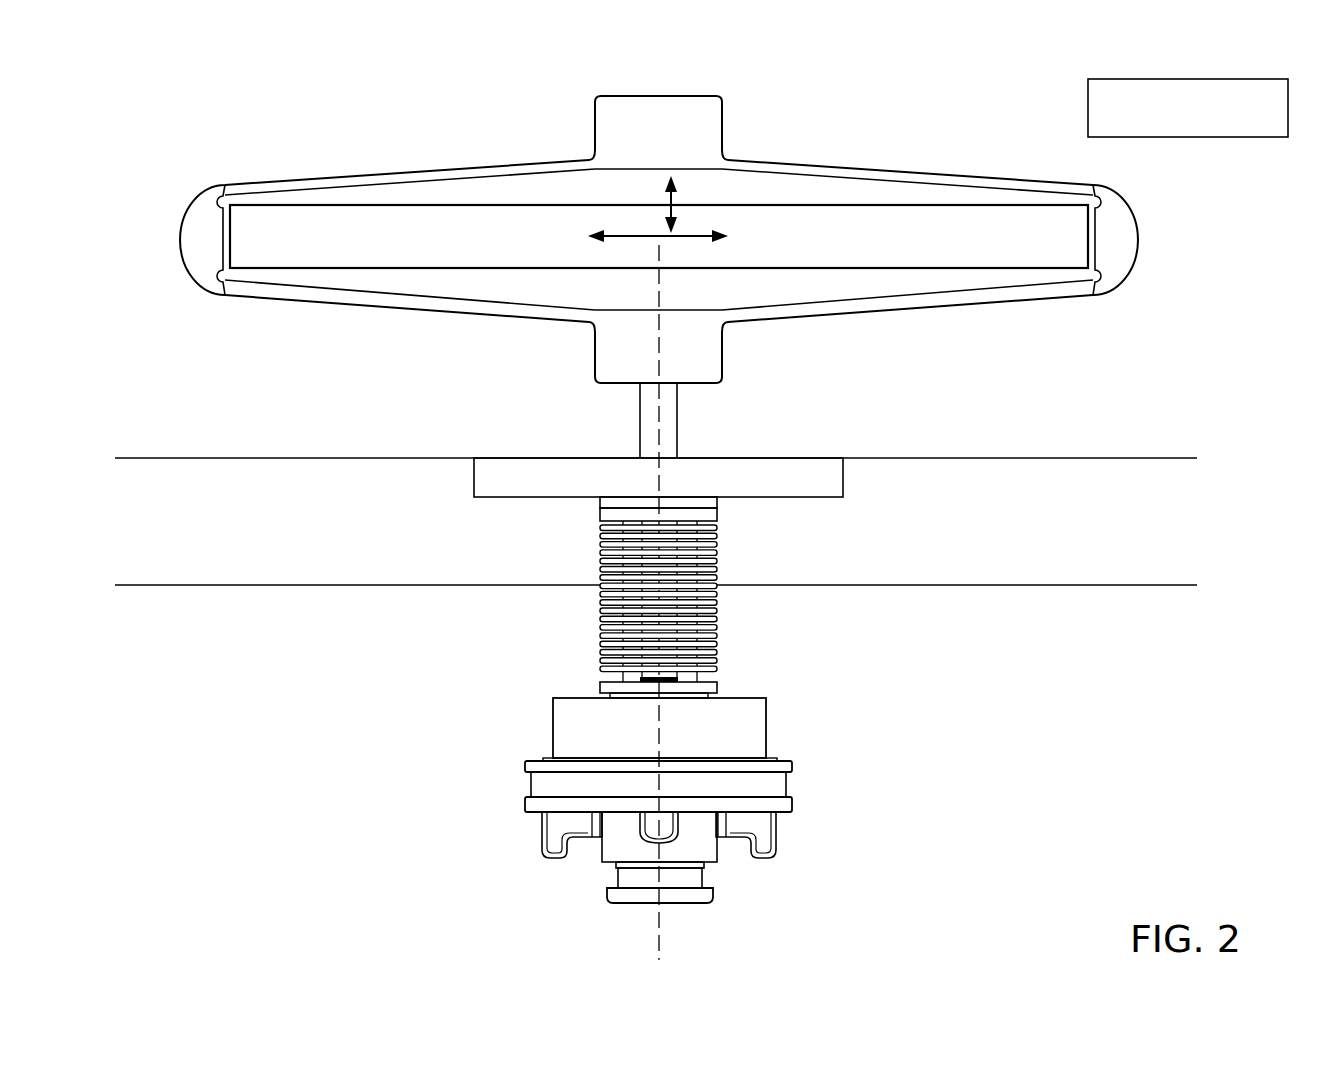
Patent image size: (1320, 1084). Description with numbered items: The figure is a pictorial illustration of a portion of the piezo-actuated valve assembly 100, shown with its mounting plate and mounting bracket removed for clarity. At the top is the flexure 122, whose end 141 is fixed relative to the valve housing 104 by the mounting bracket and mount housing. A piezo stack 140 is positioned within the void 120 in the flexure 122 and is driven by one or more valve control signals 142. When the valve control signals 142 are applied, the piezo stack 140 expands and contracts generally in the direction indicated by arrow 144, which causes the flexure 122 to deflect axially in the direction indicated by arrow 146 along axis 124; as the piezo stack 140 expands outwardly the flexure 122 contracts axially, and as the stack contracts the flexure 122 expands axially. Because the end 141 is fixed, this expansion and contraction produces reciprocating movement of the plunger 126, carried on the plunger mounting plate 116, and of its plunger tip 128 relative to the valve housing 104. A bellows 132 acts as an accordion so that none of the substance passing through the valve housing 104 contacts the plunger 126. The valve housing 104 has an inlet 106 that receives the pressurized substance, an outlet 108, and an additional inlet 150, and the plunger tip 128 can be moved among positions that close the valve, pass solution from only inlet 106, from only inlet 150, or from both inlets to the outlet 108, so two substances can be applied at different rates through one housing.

The piezo-actuated valve assembly 100 is at (358, 124).
The valve housing 104 is at (523, 758).
The inlet 106 is at (760, 858).
The outlet 108 is at (643, 905).
The plunger mounting plate 116 is at (843, 475).
The void 120 is at (950, 282).
The flexure 122 is at (1068, 188).
The axis 124 is at (660, 290).
The plunger 126 is at (637, 523).
The plunger tip 128 is at (710, 693).
The bellows 132 is at (718, 553).
The piezo stack 140 is at (818, 228).
The end of flexure 141 is at (638, 96).
The valve control signals 142 is at (1003, 222).
The arrow 144 is at (660, 236).
The arrow 146 is at (668, 202).
The additional inlet 150 is at (557, 858).